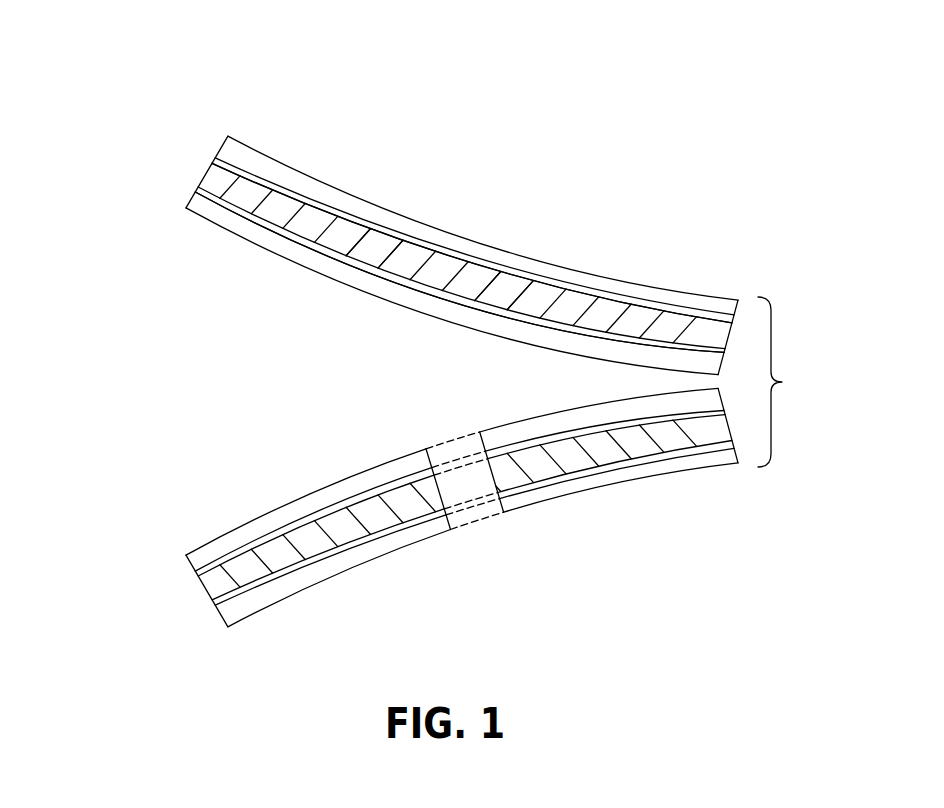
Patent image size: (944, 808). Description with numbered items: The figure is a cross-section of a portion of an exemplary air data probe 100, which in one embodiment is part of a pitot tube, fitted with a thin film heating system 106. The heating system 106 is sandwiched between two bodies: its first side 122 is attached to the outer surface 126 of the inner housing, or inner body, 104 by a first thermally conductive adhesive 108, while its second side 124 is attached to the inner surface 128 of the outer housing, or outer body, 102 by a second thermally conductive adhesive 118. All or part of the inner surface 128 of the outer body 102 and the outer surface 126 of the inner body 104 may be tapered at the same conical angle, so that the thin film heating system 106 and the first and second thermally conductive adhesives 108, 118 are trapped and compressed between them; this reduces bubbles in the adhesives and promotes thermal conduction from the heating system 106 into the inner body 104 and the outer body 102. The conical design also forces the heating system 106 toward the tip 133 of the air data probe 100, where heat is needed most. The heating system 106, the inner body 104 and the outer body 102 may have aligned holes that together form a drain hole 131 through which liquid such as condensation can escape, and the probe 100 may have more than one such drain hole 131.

The air data probe 100 is at (432, 38).
The outer housing 102 is at (352, 194).
The inner housing 104 is at (187, 206).
The thin film heating system 106 is at (214, 177).
The first thermally conductive adhesive 108 is at (199, 187).
The second thermally conductive adhesive 118 is at (214, 159).
The first side 122 is at (337, 253).
The second side 124 is at (481, 262).
The outer surface 126 is at (381, 258).
The inner surface 128 is at (527, 283).
The drain hole 131 is at (485, 552).
The tip 133 is at (787, 382).